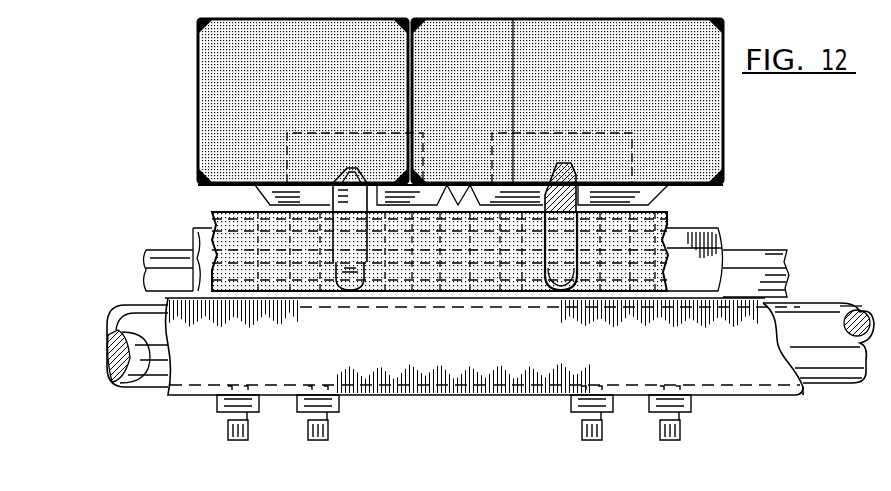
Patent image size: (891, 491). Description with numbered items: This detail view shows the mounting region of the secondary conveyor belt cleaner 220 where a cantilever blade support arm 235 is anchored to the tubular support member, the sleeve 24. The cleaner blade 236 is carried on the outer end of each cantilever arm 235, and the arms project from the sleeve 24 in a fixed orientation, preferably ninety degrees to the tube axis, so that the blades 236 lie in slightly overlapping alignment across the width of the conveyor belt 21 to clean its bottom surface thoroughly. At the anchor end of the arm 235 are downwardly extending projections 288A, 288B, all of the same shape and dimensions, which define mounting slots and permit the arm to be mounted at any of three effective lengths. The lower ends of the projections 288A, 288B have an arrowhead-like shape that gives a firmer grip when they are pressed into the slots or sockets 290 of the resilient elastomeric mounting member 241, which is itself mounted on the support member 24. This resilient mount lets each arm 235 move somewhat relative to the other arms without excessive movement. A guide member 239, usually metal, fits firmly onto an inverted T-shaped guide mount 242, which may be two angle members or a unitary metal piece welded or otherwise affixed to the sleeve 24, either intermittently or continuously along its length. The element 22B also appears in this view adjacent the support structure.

The conveyor belt 21 is at (296, 6).
The conveyor belt cleaner 220 is at (184, 192).
The cleaner blade 236 is at (772, 127).
The cantilever blade support arm 235 is at (340, 172).
The resilient elastomeric mounting member 241 is at (667, 213).
The guide member 239 is at (720, 240).
The guide mount 242 is at (757, 265).
The support rail 22B is at (792, 328).
The projection 288A is at (345, 279).
The projection 288B is at (562, 292).
The socket 290 is at (500, 293).
The support member sleeve 24 is at (500, 368).